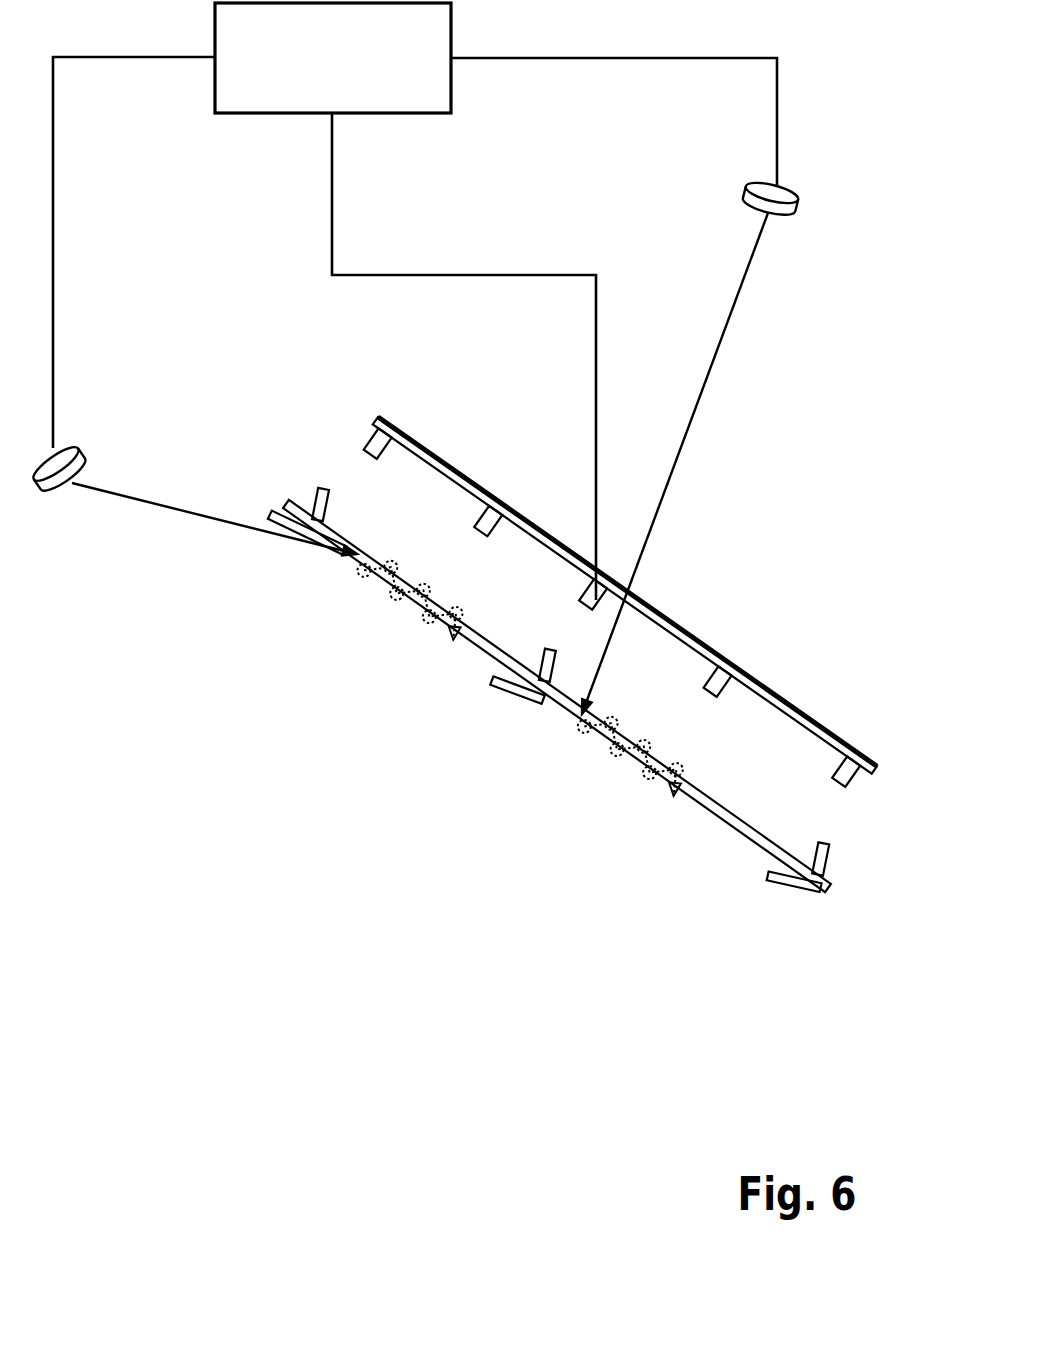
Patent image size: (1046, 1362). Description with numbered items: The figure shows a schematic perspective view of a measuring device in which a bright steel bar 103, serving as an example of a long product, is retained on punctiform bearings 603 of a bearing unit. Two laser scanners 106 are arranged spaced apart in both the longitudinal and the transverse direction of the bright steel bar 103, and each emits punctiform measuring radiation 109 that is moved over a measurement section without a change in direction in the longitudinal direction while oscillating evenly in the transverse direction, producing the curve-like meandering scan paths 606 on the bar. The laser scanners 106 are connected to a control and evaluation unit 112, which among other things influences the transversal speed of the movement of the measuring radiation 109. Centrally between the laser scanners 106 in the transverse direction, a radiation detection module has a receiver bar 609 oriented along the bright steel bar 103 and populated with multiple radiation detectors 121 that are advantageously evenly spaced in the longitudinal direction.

The control and evaluation unit 112 is at (305, 73).
The laser scanner 106 is at (52, 497).
The measuring radiation 109 is at (176, 522).
The receiver bar 609 is at (445, 460).
The radiation detector 121 is at (370, 450).
The bright steel bar 103 is at (730, 818).
The punctiform bearing 603 is at (328, 492).
The meandering scan path 606 is at (397, 597).